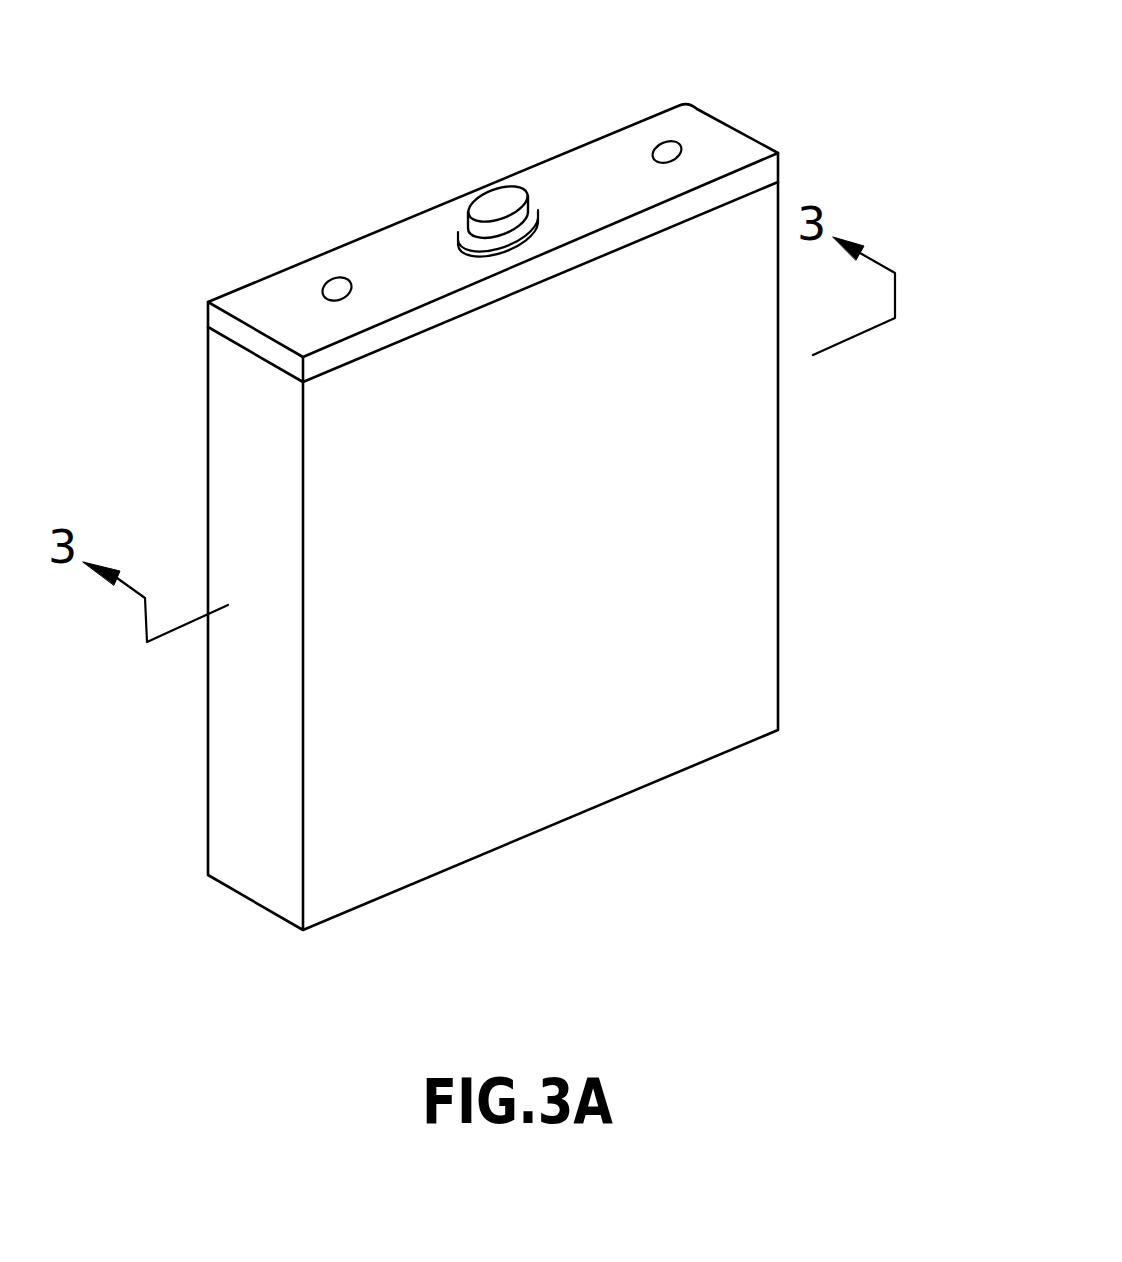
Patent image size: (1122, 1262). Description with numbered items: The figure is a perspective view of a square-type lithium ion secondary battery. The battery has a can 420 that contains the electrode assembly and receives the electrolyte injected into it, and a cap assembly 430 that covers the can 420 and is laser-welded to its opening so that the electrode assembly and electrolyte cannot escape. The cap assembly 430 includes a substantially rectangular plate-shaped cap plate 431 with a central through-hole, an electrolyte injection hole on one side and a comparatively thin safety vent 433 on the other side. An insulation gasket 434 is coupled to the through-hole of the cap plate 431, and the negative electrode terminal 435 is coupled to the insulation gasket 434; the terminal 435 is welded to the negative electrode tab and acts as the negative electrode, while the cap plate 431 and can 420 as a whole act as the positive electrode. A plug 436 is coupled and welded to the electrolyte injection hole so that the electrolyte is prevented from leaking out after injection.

The can 420 is at (708, 492).
The cap assembly 430 is at (722, 120).
The cap plate 431 is at (263, 302).
The safety vent 433 is at (665, 146).
The insulation gasket 434 is at (457, 232).
The negative electrode terminal 435 is at (492, 200).
The plug 436 is at (336, 278).